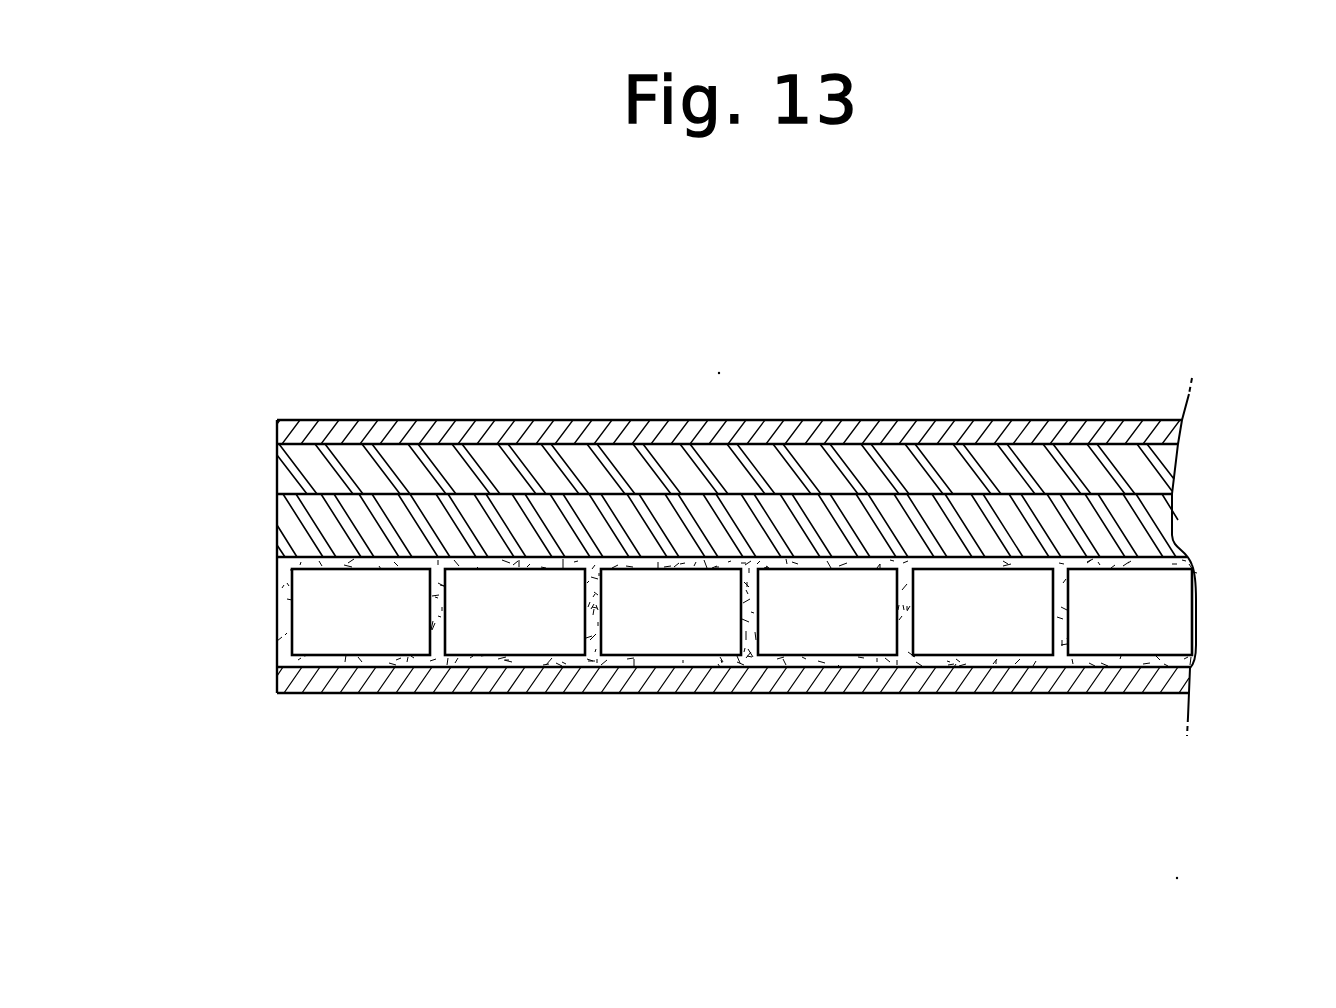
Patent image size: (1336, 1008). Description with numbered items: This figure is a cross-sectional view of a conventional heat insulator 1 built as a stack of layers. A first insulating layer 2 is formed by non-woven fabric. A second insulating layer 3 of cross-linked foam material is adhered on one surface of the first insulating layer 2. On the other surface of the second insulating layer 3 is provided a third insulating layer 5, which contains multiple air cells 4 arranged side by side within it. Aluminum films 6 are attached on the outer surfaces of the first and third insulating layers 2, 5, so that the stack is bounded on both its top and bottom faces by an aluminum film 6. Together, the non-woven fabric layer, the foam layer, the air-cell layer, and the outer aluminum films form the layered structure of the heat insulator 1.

The heat insulator 1 is at (240, 563).
The first insulating layer 2 is at (1170, 470).
The second insulating layer 3 is at (1158, 523).
The air cells 4 is at (692, 637).
The third insulating layer 5 is at (1173, 607).
The aluminum films 6 is at (1173, 432).